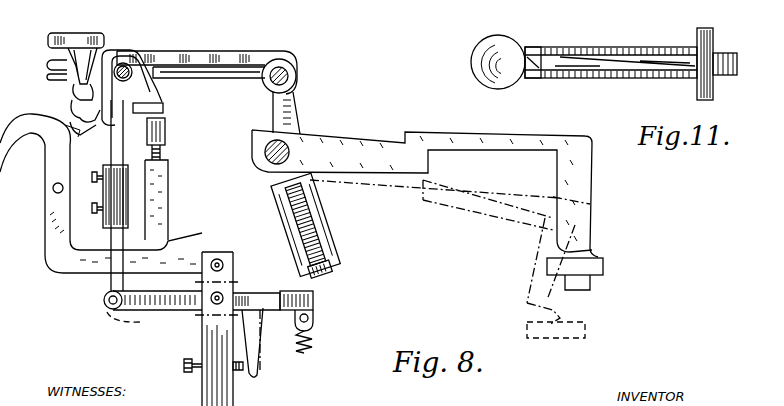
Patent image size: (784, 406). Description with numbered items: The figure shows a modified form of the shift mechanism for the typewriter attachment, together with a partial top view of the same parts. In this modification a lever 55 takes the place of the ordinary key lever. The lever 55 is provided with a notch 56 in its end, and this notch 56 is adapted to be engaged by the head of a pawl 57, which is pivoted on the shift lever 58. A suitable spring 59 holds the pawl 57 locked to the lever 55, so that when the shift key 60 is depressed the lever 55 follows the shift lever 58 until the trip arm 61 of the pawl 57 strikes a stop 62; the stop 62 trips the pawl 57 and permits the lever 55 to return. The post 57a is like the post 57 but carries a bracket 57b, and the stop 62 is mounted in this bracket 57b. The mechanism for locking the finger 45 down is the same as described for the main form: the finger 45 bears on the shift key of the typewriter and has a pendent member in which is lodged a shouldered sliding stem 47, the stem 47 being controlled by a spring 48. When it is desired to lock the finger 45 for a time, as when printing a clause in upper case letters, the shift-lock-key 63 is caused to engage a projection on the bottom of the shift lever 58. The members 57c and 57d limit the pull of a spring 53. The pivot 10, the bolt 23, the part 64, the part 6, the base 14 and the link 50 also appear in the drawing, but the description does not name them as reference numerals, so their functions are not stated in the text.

In FIG. 8, the shift key 60 is at (63, 35).
In FIG. 11, the shift key 60 is at (487, 40).
In FIG. 8, the notch 56 is at (103, 52).
In FIG. 11, the notch 56 is at (540, 50).
In FIG. 8, the lever 55 is at (130, 52).
In FIG. 11, the lever 55 is at (620, 58).
In FIG. 8, the shift lever 58 is at (173, 55).
In FIG. 11, the shift lever 58 is at (637, 50).
In FIG. 8, the pivot pin 10 is at (293, 72).
In FIG. 11, the pivot pin 10 is at (711, 32).
In FIG. 8, the bolt 23 is at (160, 80).
In FIG. 8, the spring 59 is at (62, 80).
In FIG. 8, the pawl 57 is at (68, 88).
In FIG. 8, the cam 64 is at (73, 107).
In FIG. 8, the trip arm 61 is at (163, 109).
In FIG. 8, the stop 62 is at (167, 138).
In FIG. 8, the shift-lock-key 63 is at (48, 155).
In FIG. 8, the arm 6 is at (59, 207).
In FIG. 8, the finger 45 is at (368, 143).
In FIG. 8, the spring 48 is at (282, 221).
In FIG. 8, the shouldered sliding stem 47 is at (320, 281).
In FIG. 8, the base 14 is at (604, 269).
In FIG. 8, the spring 53 is at (314, 338).
In FIG. 8, the link 50 is at (143, 303).
In FIG. 8, the post 57a is at (233, 400).
In FIG. 8, the bracket 57b is at (186, 242).
In FIG. 8, the spring pull limiter 57c is at (256, 371).
In FIG. 8, the spring pull limiter 57d is at (185, 364).